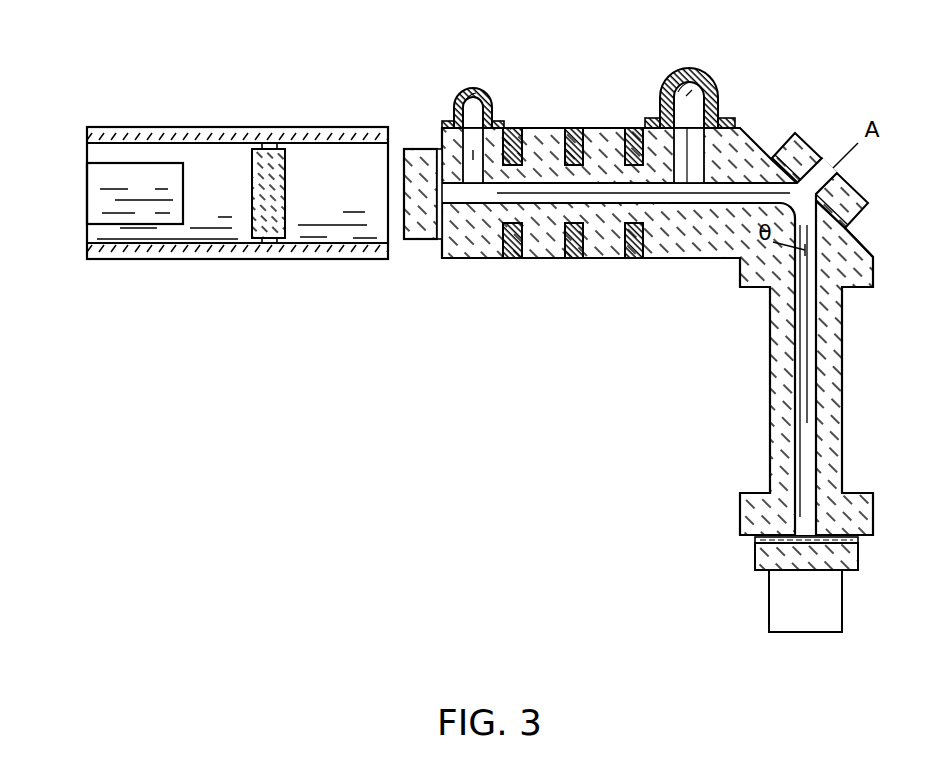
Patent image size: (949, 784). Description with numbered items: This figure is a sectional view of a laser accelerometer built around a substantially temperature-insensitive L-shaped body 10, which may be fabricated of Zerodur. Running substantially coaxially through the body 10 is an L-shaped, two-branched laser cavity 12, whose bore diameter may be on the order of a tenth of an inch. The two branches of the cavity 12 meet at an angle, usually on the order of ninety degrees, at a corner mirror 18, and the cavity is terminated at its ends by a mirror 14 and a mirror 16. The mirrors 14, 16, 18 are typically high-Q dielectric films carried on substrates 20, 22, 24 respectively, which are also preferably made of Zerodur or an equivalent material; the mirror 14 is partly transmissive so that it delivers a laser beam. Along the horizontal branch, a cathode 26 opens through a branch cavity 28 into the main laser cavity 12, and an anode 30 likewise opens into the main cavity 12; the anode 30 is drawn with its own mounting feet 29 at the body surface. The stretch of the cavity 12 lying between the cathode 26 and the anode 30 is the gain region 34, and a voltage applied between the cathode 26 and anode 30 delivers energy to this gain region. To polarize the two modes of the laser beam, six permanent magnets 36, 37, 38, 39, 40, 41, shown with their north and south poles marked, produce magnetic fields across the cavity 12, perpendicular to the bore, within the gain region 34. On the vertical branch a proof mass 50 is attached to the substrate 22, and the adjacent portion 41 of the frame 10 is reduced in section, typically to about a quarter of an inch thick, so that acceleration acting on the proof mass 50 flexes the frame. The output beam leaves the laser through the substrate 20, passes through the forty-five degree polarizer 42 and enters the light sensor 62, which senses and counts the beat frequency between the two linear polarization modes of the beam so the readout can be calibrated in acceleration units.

The L-shaped body 10 is at (862, 172).
The laser cavity 12 is at (807, 367).
The mirror 14 is at (415, 150).
The mirror 16 is at (858, 540).
The corner mirror 18 is at (787, 148).
The substrate 20 is at (403, 170).
The substrate 22 is at (858, 570).
The substrate 24 is at (862, 209).
The cathode 26 is at (707, 80).
The branch cavity 28 is at (717, 116).
The tube mounting foot 29 is at (455, 106).
The anode 30 is at (483, 88).
The gain region 34 is at (665, 193).
The permanent magnet 36 is at (512, 127).
The permanent magnet 37 is at (510, 258).
The permanent magnet 38 is at (572, 127).
The permanent magnet 39 is at (572, 258).
The permanent magnet 40 is at (630, 127).
The permanent magnet 41 is at (628, 258).
The 45 degree polarizer 42 is at (278, 198).
The proof mass 50 is at (830, 627).
The light sensor 62 is at (98, 198).